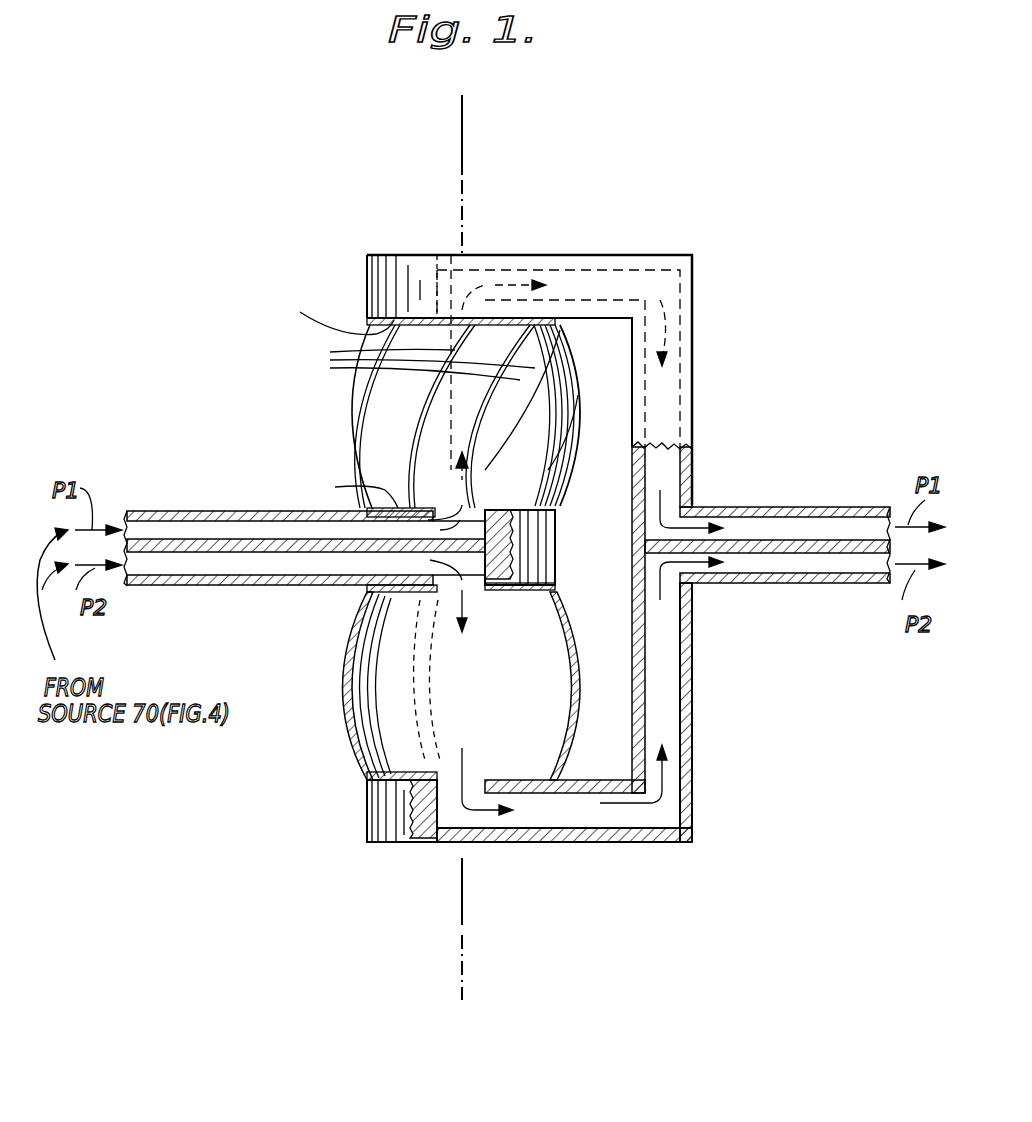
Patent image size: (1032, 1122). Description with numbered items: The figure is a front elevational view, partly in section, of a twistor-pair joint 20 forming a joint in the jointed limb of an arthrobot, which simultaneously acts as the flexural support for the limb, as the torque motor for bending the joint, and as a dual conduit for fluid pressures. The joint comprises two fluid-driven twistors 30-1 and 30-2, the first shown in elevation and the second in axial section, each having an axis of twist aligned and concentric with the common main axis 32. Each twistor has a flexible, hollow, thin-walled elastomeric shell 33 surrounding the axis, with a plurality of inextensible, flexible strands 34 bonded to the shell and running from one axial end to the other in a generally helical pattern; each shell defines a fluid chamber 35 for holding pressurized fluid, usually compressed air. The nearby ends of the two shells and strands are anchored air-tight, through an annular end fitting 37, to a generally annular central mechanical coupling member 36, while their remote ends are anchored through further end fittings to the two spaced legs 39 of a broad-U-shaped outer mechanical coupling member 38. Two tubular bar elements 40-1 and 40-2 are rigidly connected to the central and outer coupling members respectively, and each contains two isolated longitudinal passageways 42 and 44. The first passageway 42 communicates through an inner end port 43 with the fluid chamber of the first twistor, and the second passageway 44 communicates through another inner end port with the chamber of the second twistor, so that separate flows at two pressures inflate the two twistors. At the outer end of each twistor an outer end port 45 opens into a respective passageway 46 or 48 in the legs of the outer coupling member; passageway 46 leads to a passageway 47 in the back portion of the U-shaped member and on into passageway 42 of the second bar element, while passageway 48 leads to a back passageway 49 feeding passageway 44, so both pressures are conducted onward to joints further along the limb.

The twistor-pair joint 20 is at (756, 255).
The first twistor 30-1 is at (432, 537).
The second twistor 30-2 is at (335, 693).
The main axis 32 is at (462, 142).
The elastomeric shell 33 is at (348, 438).
The strands 34 is at (585, 480).
The fluid chamber 35 is at (418, 562).
The central mechanical coupling member 36 is at (568, 548).
The annular end fitting 37 is at (405, 778).
The outer mechanical coupling member 38 is at (700, 358).
The spaced legs 39 is at (397, 255).
The bar element 40-1 is at (471, 539).
The bar element 40-2 is at (846, 490).
The first passageway 42 is at (262, 522).
The inner end port 43 is at (478, 508).
The second passageway 44 is at (240, 580).
The outer end port 45 is at (451, 268).
The passageway 46 is at (590, 290).
The passageway 47 is at (690, 455).
The passageway 48 is at (585, 815).
The back passageway 49 is at (668, 707).